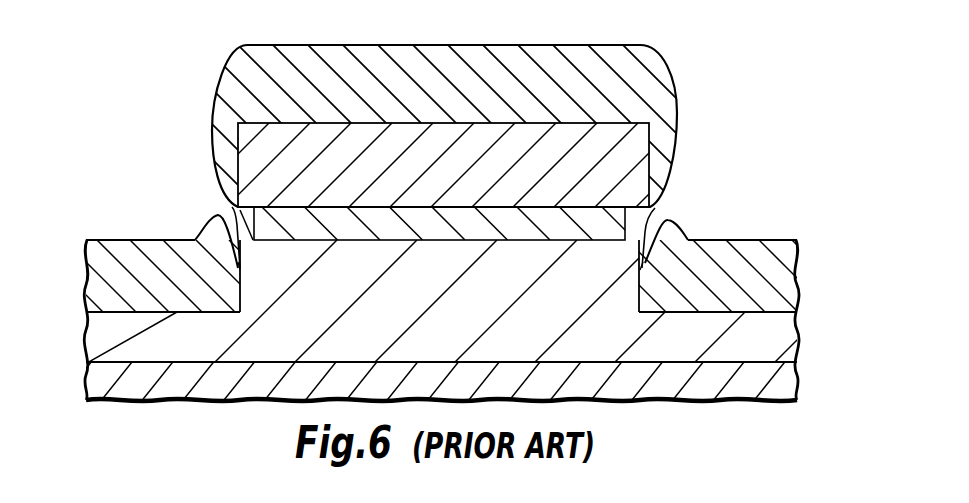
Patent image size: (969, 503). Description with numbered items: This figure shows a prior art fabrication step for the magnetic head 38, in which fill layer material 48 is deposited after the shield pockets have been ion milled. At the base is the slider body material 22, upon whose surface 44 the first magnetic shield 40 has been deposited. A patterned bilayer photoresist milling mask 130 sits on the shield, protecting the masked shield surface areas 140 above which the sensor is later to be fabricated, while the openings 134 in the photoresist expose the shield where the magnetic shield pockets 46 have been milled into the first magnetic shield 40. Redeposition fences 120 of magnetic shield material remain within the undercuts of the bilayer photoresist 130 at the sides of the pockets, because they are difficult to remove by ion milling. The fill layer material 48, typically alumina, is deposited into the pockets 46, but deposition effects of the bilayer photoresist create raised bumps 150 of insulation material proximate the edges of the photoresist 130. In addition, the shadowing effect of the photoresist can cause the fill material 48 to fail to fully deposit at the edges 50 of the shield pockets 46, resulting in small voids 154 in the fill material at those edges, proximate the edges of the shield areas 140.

The magnetic head 38 is at (206, 92).
The fill layer material 48 is at (97, 268).
The openings 134 is at (103, 133).
The magnetic shield pockets 46 is at (107, 218).
The bilayer photoresist milling mask 130 is at (248, 159).
The voids 154 is at (232, 207).
The raised bumps 150 is at (205, 230).
The redeposition fences 120 is at (250, 246).
The masked shield surface areas 140 is at (451, 236).
The edges of the S1 shield pockets 50 is at (230, 300).
The surface of the slider body material 44 is at (442, 361).
The first magnetic shield (S1) 40 is at (705, 346).
The slider body material 22 is at (782, 384).